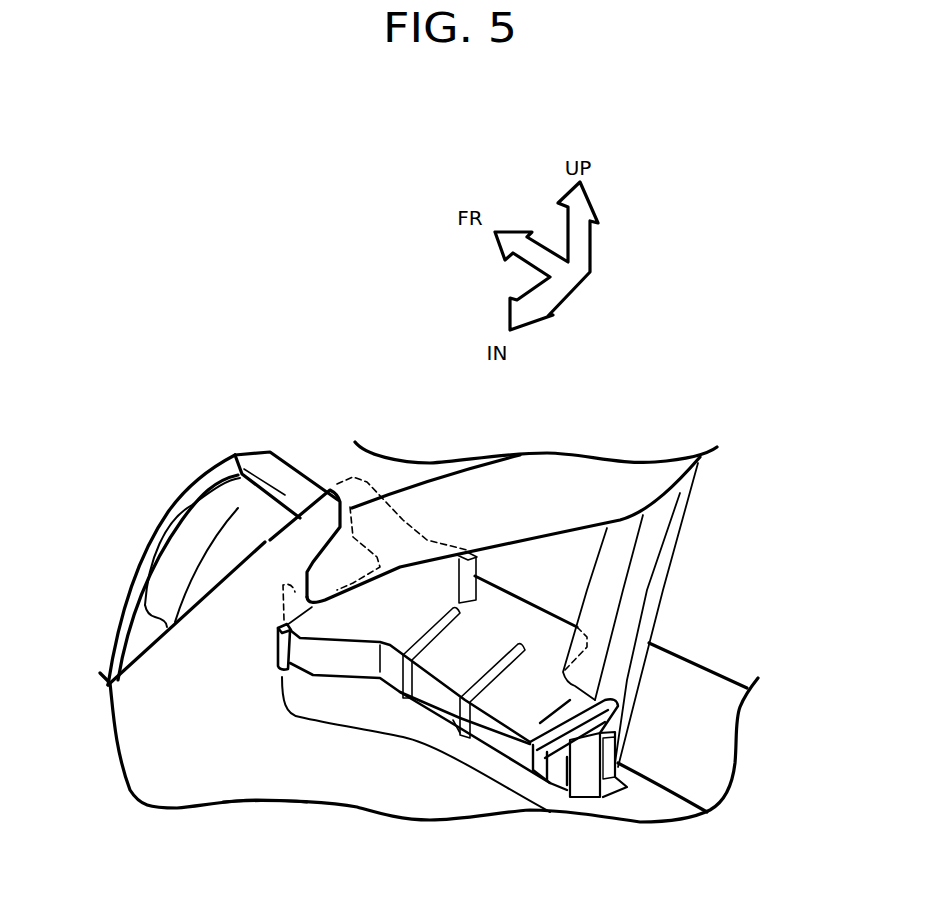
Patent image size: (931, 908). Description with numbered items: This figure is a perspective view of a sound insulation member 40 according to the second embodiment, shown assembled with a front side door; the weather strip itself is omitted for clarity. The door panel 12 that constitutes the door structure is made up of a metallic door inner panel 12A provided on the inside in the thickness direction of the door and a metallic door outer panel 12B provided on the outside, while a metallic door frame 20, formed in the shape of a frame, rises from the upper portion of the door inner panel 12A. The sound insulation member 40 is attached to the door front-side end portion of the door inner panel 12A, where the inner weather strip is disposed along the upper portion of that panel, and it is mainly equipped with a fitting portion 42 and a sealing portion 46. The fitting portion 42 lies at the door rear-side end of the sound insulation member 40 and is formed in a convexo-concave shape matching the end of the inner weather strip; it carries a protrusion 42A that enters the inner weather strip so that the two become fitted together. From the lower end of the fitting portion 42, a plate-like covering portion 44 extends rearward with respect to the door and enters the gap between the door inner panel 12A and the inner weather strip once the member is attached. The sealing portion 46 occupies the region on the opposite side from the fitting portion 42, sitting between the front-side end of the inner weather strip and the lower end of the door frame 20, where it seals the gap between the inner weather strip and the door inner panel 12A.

The door panel 12 is at (250, 803).
The door inner panel 12A is at (310, 803).
The door outer panel 12B is at (287, 460).
The door frame 20 is at (700, 462).
The sound insulation member 40 is at (543, 582).
The fitting portion 42 is at (570, 788).
The protrusion 42A is at (580, 805).
The covering portion 44 is at (620, 793).
The sealing portion 46 is at (413, 528).